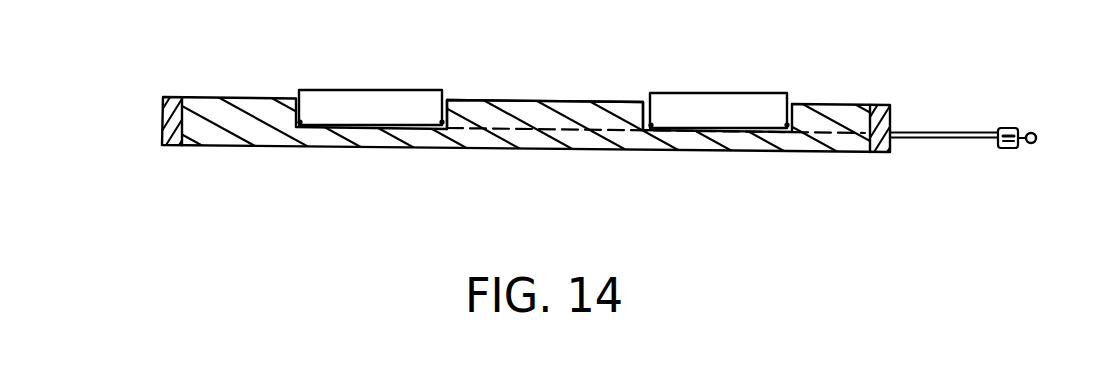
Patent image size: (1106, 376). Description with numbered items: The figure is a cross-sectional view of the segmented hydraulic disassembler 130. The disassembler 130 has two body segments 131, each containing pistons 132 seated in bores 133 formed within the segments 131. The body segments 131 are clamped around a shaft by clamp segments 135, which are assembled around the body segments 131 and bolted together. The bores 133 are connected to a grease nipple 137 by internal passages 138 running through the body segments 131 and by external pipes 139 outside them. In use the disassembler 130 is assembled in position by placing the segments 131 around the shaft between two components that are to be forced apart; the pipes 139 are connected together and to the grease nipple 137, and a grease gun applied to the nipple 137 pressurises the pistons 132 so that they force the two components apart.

The segmented disassembler 130 is at (269, 178).
The body segment 131 is at (558, 102).
The piston 132 is at (753, 93).
The bore 133 is at (463, 108).
The clamp segment 135 is at (170, 97).
The grease nipple 137 is at (1015, 127).
The internal passage 138 is at (507, 130).
The external pipe 139 is at (950, 140).